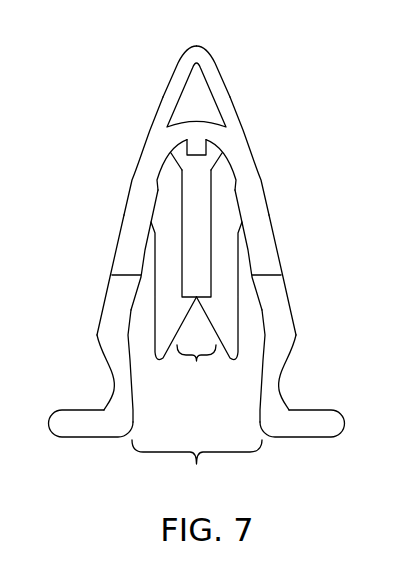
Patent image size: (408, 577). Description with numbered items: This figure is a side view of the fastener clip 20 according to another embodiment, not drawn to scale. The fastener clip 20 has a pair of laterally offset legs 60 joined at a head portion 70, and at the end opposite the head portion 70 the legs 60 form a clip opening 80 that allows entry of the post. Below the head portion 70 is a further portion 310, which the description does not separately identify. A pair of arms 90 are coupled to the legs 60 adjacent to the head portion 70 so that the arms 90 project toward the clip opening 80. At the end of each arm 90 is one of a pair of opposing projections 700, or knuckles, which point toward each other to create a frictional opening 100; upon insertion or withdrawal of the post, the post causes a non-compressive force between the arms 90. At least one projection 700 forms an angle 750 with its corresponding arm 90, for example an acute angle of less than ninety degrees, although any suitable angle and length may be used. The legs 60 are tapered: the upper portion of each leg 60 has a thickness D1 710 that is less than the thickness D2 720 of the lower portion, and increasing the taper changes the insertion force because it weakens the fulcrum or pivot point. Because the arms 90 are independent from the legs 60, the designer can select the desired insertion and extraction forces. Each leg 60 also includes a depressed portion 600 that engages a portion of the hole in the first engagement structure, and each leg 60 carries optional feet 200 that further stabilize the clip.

The fastener clip 20 is at (286, 121).
The head portion 70 is at (205, 73).
The bridge portion with notch 310 is at (198, 148).
The thickness D1 of upper leg portion 710 is at (124, 177).
The upper leg thickness D1 is at (180, 188).
The legs 60 is at (115, 300).
The thickness D2 of lower leg portion 720 is at (90, 337).
The lower leg thickness D2 is at (143, 337).
The depressed portion 600 is at (115, 385).
The feet 200 is at (63, 425).
The angle α 750 is at (196, 272).
The arms 90 is at (158, 364).
The opposing projections 700 is at (170, 312).
The frictional opening 100 is at (196, 366).
The clip opening 80 is at (197, 464).